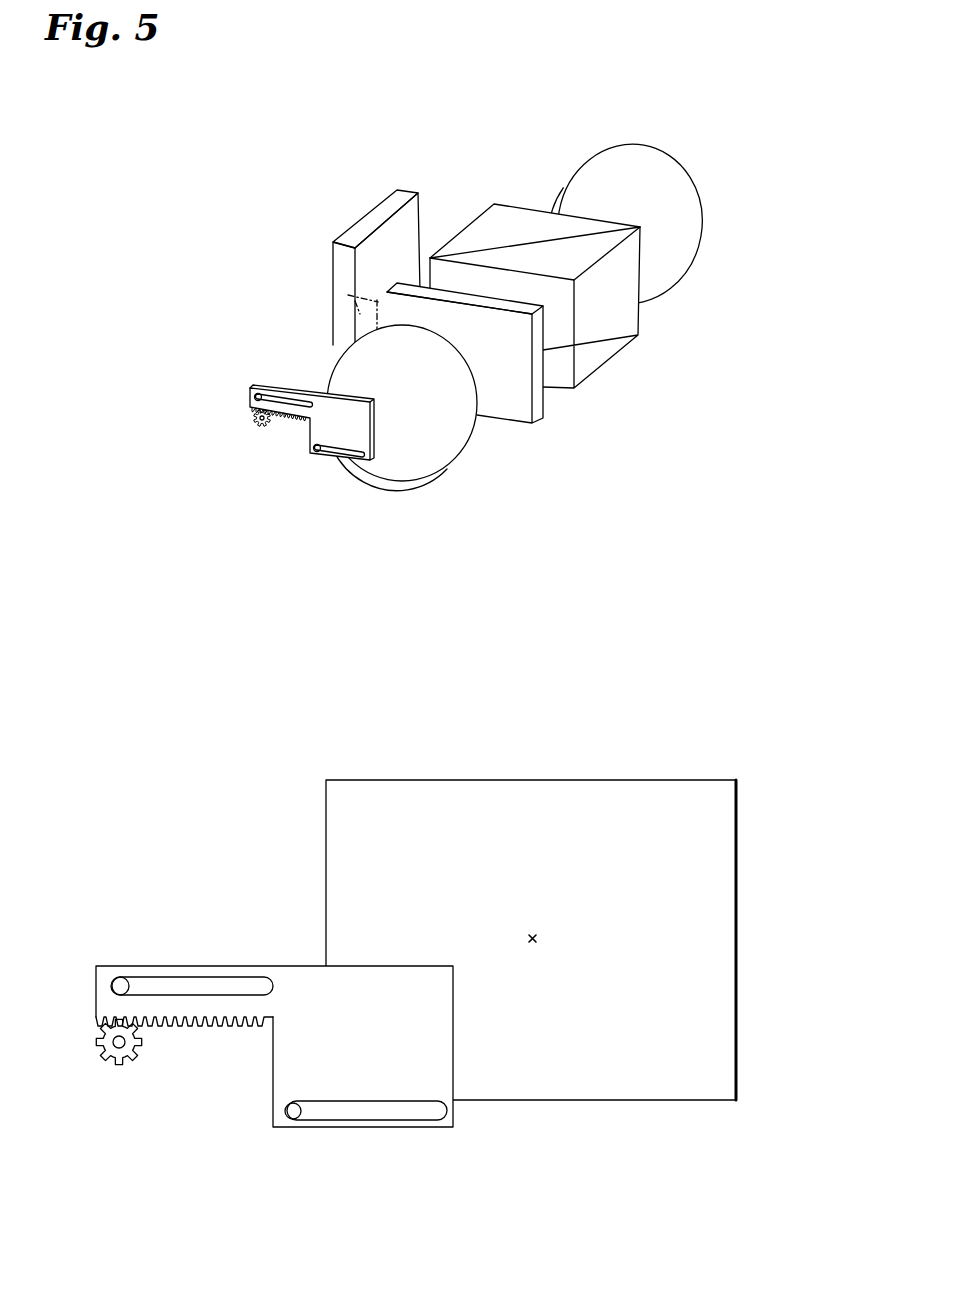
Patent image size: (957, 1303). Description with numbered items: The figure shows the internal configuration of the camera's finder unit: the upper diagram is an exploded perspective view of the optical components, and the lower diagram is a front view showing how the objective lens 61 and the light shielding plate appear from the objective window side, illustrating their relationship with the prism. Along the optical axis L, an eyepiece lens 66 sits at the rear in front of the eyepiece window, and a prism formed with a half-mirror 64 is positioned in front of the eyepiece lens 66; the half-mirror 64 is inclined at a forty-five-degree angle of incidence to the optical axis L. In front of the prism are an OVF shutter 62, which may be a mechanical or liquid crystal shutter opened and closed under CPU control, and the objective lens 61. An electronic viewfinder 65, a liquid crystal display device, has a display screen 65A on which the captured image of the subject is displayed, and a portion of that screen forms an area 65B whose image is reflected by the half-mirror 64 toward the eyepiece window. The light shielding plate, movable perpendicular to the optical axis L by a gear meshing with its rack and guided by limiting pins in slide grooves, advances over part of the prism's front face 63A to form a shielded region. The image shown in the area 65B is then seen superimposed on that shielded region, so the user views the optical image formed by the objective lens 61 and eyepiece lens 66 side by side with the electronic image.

The objective lens 61 is at (437, 438).
The OVF shutter 62 is at (538, 395).
The front face 63A is at (712, 922).
The half-mirror 64 is at (602, 340).
The electronic viewfinder 65 is at (367, 236).
The display screen 65A is at (425, 217).
The area 65B is at (347, 293).
The eyepiece lens 66 is at (703, 217).
The optical axis L is at (543, 922).